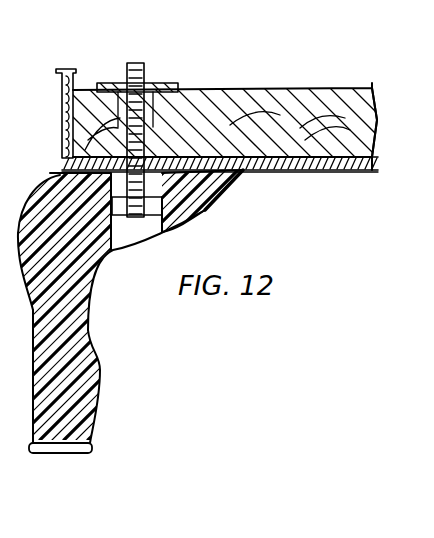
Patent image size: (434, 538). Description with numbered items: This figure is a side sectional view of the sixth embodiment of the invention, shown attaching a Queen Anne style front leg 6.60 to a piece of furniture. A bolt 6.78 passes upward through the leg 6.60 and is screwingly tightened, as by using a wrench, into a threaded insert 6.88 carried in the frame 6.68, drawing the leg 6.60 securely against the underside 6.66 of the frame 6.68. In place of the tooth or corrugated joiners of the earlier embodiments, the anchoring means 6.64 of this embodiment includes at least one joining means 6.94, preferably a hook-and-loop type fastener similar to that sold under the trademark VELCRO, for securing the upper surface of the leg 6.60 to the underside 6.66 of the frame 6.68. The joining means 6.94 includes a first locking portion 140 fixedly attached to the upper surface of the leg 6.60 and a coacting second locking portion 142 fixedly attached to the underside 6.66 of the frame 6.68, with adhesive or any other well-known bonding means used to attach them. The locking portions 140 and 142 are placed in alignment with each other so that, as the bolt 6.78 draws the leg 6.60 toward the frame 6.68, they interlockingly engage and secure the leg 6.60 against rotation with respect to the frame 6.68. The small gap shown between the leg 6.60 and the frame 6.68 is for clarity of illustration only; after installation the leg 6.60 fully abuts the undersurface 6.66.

The leg 6.60 is at (90, 342).
The anchoring means 6.64 is at (168, 229).
The underside of frame 6.66 is at (356, 170).
The frame 6.68 is at (280, 110).
The bolt 6.78 is at (140, 66).
The threaded insert 6.88 is at (108, 83).
The joining means 6.94 is at (195, 178).
The first locking portion 140 is at (240, 173).
The second locking portion 142 is at (238, 169).